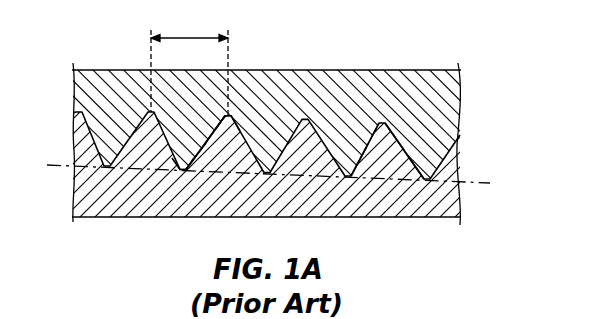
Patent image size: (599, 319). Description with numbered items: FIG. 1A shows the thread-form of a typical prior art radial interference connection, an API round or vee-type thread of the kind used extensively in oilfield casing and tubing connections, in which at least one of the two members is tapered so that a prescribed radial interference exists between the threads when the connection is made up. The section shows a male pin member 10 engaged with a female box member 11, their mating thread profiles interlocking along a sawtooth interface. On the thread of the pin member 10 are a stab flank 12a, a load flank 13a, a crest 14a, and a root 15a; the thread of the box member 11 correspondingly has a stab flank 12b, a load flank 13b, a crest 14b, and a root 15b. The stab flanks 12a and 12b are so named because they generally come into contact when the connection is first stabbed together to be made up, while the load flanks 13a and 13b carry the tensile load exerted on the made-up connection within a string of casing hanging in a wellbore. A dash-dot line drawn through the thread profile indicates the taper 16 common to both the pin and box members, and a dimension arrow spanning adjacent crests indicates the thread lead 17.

The pin member 10 is at (98, 218).
The box member 11 is at (130, 68).
The stab flank 12a is at (400, 156).
The stab flank 12b is at (395, 143).
The load flank 13a is at (372, 165).
The load flank 13b is at (362, 156).
The crest 14a is at (228, 118).
The crest 14b is at (182, 171).
The root 15a is at (188, 176).
The root 15b is at (237, 110).
The taper 16 is at (487, 182).
The thread lead 17 is at (190, 37).